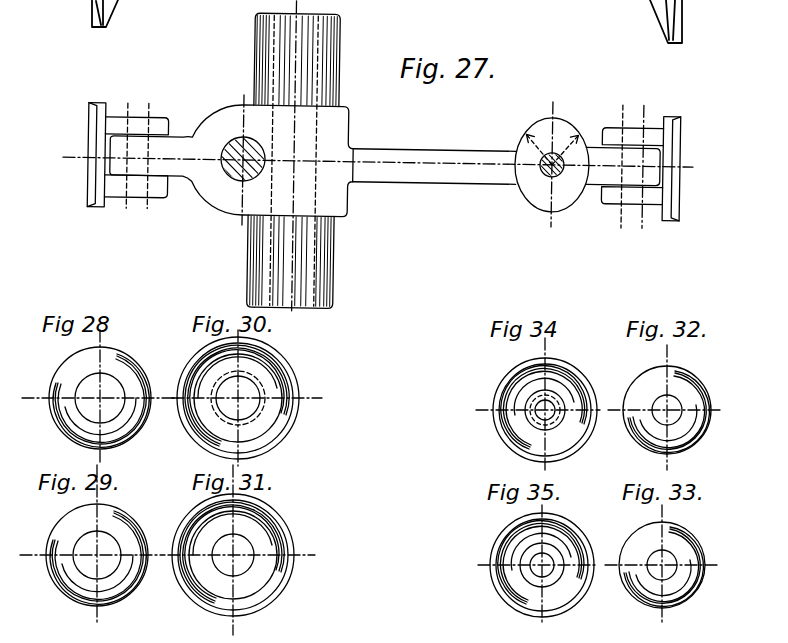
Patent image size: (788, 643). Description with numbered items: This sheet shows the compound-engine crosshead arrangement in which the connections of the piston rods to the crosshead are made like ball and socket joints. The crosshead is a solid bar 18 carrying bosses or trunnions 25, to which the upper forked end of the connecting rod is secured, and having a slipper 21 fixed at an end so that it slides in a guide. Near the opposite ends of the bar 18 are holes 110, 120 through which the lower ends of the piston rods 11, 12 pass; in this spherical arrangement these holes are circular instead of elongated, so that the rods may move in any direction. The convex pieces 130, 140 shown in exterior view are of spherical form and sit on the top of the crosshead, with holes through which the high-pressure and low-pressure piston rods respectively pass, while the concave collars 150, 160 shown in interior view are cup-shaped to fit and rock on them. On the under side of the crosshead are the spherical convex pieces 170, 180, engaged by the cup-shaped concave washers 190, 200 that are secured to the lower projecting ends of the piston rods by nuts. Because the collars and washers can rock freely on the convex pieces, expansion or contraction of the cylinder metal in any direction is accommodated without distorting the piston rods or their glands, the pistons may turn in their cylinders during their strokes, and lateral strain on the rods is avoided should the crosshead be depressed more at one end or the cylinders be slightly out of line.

In FIG. 27, the bosses or trunnions 25 is at (256, 42).
In FIG. 27, the slipper 21 is at (88, 134).
In FIG. 27, the piston rod 12 is at (250, 148).
In FIG. 27, the hole 120 is at (234, 180).
In FIG. 27, the crosshead bar 18 is at (411, 147).
In FIG. 27, the piston rod 11 is at (543, 167).
In FIG. 27, the hole 110 is at (557, 172).
In FIG. 28, the convex piece 130 is at (65, 358).
In FIG. 30, the concave collar 150 is at (274, 426).
In FIG. 29, the convex piece 170 is at (110, 598).
In FIG. 31, the concave washer 190 is at (258, 596).
In FIG. 34, the concave collar 160 is at (566, 437).
In FIG. 32, the convex piece 140 is at (705, 440).
In FIG. 35, the concave washer 200 is at (505, 588).
In FIG. 33, the convex piece 180 is at (699, 591).